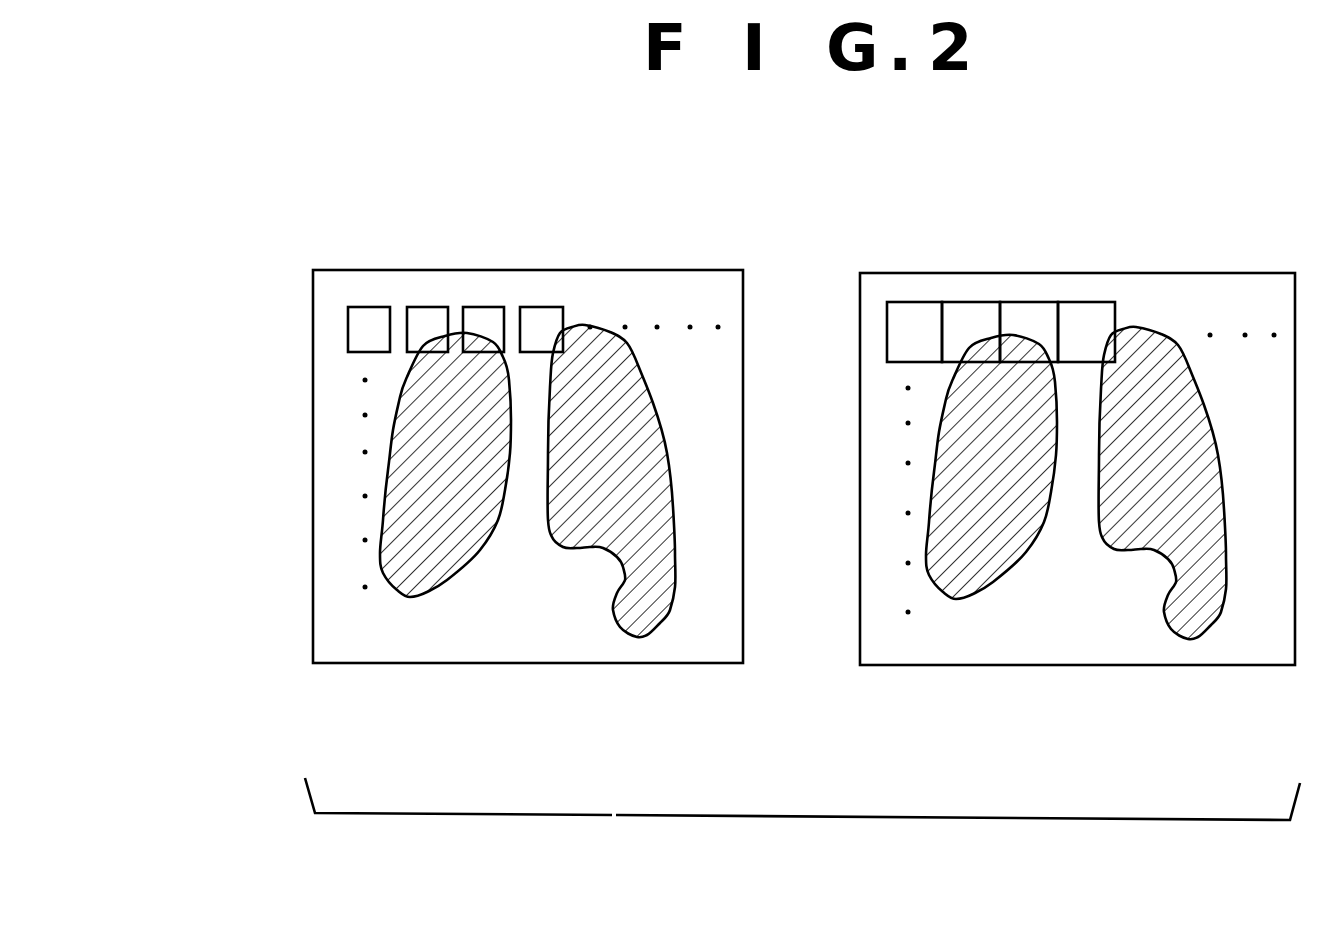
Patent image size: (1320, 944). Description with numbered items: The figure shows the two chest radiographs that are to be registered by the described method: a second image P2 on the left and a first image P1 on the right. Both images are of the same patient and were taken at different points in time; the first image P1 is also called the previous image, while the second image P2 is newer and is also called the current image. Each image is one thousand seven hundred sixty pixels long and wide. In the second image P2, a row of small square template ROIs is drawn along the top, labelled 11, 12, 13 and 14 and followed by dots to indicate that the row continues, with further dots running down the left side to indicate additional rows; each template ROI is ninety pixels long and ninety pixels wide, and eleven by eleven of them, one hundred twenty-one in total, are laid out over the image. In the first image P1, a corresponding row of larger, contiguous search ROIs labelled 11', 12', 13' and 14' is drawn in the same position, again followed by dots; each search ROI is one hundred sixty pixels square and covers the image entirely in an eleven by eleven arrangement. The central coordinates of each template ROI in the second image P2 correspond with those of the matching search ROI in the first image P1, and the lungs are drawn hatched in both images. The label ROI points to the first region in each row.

The first region of interest of image A 11 is at (369, 329).
The second region of interest of image A 12 is at (427, 329).
The third region of interest of image A 13 is at (483, 329).
The fourth region of interest of image A 14 is at (541, 329).
The first corresponding region of interest of image B 11' is at (914, 332).
The second corresponding region of interest of image B 12' is at (971, 332).
The third corresponding region of interest of image B 13' is at (1029, 332).
The fourth corresponding region of interest of image B 14' is at (1086, 332).
The region of interest ROI is at (377, 307).
The first image P1 is at (1218, 273).
The second image P2 is at (642, 270).